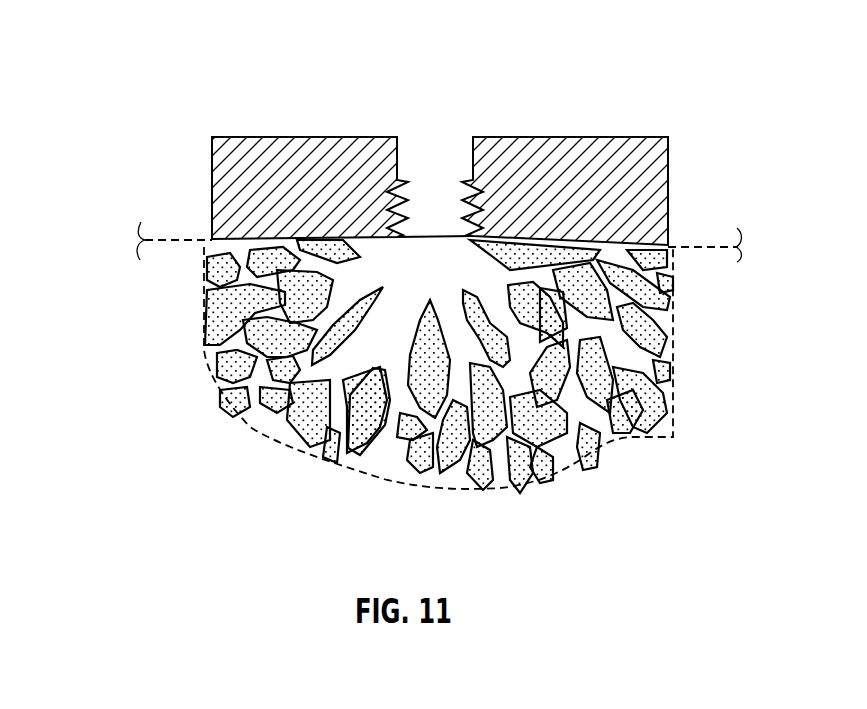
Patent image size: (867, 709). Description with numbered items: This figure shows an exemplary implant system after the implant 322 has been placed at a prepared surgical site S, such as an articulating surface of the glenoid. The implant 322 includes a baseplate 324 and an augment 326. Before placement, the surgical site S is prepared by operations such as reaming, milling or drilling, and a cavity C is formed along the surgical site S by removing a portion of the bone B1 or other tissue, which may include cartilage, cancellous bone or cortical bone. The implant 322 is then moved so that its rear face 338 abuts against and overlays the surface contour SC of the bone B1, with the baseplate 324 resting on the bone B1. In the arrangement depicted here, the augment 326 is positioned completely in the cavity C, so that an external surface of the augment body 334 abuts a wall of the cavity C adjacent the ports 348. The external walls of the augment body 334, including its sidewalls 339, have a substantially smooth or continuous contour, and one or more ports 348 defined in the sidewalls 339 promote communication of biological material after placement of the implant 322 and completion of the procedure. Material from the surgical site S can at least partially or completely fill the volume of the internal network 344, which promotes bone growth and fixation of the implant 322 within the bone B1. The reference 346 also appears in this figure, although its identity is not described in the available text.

The implant 322 is at (246, 82).
The baseplate 324 is at (212, 156).
The augment 326 is at (205, 262).
The augment body 334 is at (215, 347).
The rear face 338 is at (483, 488).
The sidewalls 339 is at (207, 318).
The internal network 344 is at (680, 372).
The bone fragment 346 is at (250, 393).
The ports 348 is at (495, 488).
The surgical site S is at (662, 58).
The surface contour SC is at (160, 228).
The bone B1 is at (682, 268).
The cavity C is at (597, 437).